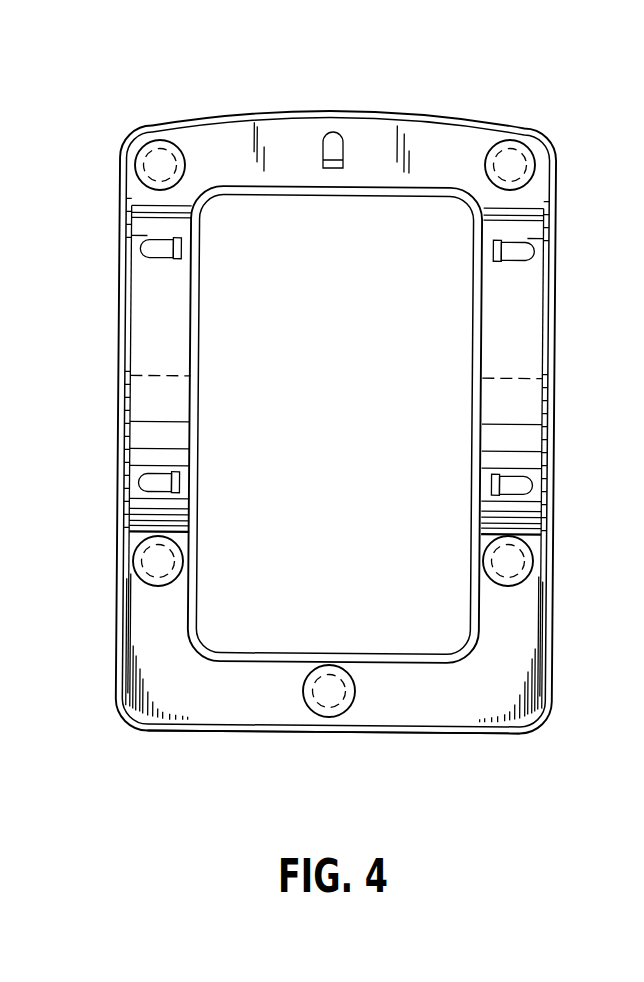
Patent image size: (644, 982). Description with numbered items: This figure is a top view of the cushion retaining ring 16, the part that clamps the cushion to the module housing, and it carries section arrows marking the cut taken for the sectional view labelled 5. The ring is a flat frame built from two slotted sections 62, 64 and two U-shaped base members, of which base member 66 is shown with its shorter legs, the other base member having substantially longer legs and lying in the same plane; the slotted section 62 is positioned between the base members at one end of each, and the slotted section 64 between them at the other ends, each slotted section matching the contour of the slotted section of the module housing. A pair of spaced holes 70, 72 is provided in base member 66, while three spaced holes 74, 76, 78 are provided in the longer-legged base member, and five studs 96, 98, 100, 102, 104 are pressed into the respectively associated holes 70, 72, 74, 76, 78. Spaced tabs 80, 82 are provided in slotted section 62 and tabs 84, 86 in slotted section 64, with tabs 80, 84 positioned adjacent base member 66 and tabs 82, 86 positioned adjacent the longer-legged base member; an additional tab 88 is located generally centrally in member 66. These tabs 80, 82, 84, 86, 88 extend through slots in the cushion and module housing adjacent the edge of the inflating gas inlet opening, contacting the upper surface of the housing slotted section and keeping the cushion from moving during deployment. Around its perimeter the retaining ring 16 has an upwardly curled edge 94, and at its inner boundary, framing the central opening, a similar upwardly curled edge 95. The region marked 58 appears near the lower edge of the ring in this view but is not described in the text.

The cushion retaining ring 16 is at (168, 94).
The base wall 58 is at (334, 759).
The slotted section 62 is at (143, 441).
The slotted section 64 is at (530, 437).
The retaining ring base member 66 is at (278, 138).
The hole 70 is at (137, 160).
The hole 72 is at (547, 140).
The hole 74 is at (138, 570).
The hole 76 is at (312, 695).
The hole 78 is at (527, 563).
The tab 80 is at (180, 255).
The tab 82 is at (180, 486).
The tab 84 is at (487, 250).
The tab 86 is at (487, 482).
The tab 88 is at (334, 170).
The upwardly curled edge 94 is at (550, 672).
The upwardly curled edge 95 is at (200, 618).
The stud 96 is at (138, 172).
The stud 98 is at (528, 160).
The stud 100 is at (137, 557).
The stud 102 is at (340, 700).
The stud 104 is at (527, 550).
The section line 5- 5 is at (537, 43).